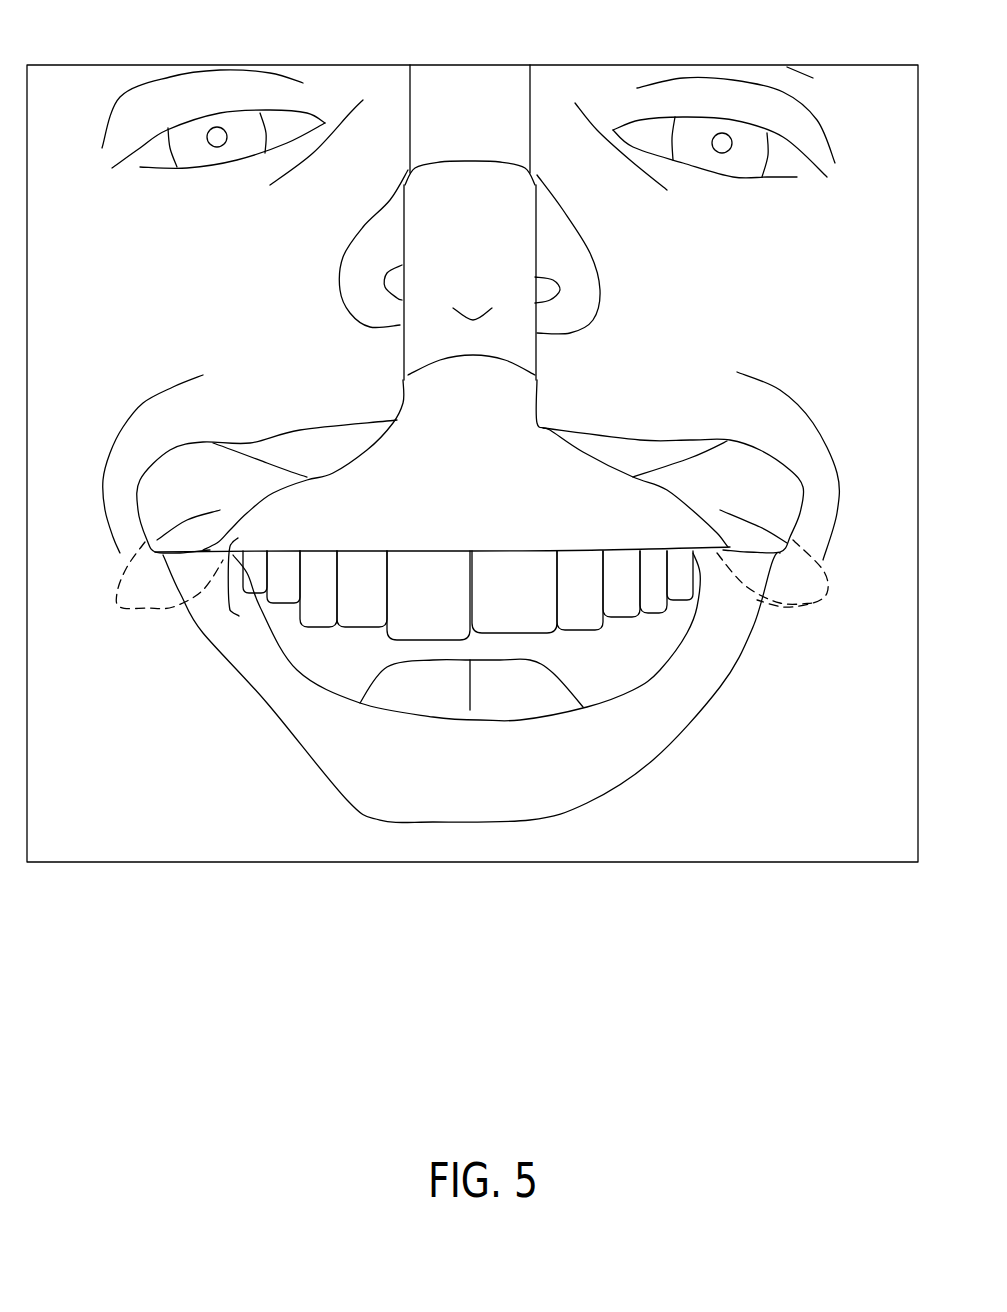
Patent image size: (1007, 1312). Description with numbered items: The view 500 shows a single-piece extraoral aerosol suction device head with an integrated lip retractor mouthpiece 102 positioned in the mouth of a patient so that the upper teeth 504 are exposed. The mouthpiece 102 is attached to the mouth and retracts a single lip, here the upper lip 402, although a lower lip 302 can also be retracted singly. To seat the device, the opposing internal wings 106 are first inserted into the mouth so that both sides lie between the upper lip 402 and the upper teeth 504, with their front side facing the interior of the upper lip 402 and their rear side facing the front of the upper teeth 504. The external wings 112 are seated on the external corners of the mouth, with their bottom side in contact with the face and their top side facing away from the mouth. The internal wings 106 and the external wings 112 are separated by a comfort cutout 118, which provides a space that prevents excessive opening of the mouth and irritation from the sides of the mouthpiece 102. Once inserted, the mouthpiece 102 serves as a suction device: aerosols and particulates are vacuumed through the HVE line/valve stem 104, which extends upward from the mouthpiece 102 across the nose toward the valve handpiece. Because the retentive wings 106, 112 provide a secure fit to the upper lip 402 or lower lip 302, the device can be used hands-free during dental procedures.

The view 500 is at (852, 51).
The mouthpiece 102 is at (500, 477).
The HVE line/valve stem 104 is at (493, 126).
The external wings 112 is at (173, 470).
The upper lip 402 is at (627, 445).
The internal wings 106 is at (117, 593).
The comfort cutout 118 is at (230, 573).
The lower lip 302 is at (387, 780).
The upper teeth 504 is at (537, 608).